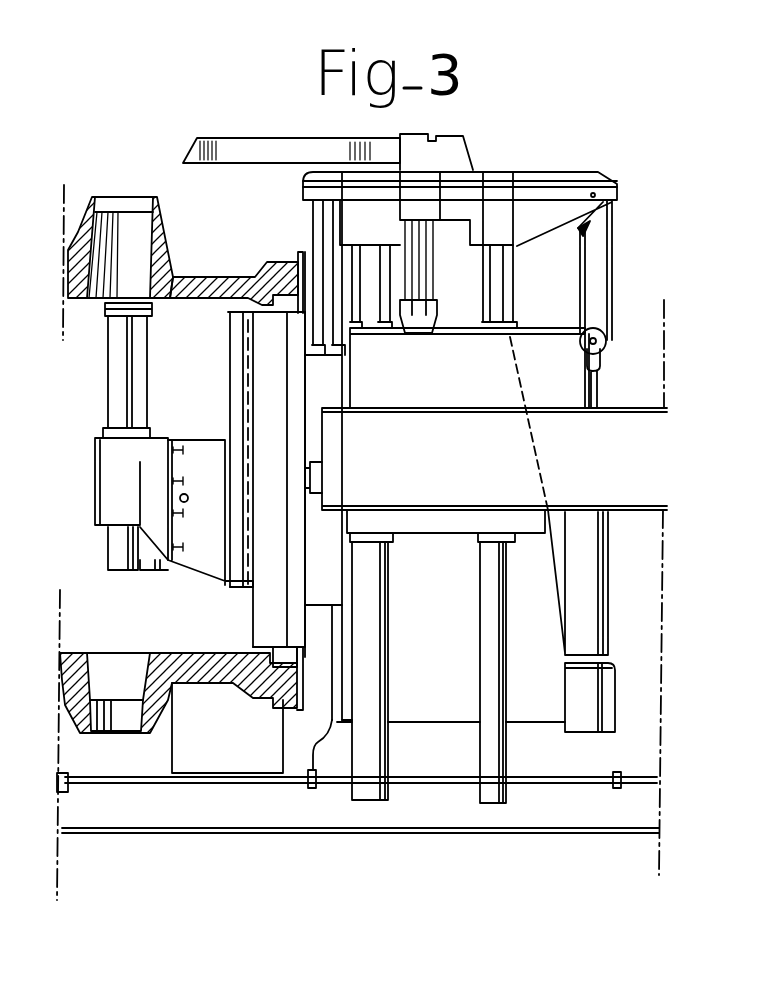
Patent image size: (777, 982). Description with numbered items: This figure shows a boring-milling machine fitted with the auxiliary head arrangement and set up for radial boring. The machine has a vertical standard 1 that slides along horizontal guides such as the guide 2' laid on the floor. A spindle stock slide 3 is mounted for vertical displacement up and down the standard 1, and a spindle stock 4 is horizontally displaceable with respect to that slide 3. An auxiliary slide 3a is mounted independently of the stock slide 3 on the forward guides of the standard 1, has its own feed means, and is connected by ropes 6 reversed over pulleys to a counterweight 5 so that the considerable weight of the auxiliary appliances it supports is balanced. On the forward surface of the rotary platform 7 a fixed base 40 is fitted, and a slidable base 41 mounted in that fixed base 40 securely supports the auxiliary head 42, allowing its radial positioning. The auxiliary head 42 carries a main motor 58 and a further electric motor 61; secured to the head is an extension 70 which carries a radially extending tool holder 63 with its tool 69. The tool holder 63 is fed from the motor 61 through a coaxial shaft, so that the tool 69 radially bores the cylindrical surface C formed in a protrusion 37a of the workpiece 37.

The vertical standard 1 is at (428, 613).
The horizontal guide 2' is at (360, 844).
The spindle stock slide 3 is at (507, 373).
The auxiliary slide 3a is at (332, 520).
The spindle stock 4 is at (625, 432).
The counterweight 5 is at (595, 607).
The ropes 6 is at (612, 251).
The rotary platform 7 is at (266, 614).
The workpiece 37 is at (200, 280).
The protrusion 37a is at (80, 231).
The fixed base 40 is at (242, 383).
The slidable base 41 is at (202, 557).
The auxiliary head 42 is at (91, 495).
The main motor 58 is at (157, 571).
The electric motor 61 is at (118, 564).
The radially extending tool holder 63 is at (118, 313).
The tool 69 is at (152, 307).
The extension 70 is at (117, 386).
The cylindrical surface C is at (152, 200).